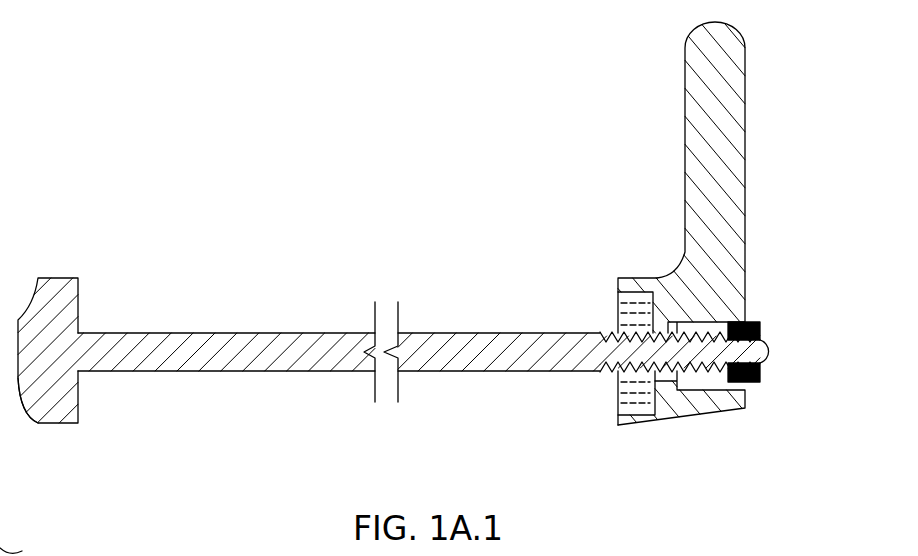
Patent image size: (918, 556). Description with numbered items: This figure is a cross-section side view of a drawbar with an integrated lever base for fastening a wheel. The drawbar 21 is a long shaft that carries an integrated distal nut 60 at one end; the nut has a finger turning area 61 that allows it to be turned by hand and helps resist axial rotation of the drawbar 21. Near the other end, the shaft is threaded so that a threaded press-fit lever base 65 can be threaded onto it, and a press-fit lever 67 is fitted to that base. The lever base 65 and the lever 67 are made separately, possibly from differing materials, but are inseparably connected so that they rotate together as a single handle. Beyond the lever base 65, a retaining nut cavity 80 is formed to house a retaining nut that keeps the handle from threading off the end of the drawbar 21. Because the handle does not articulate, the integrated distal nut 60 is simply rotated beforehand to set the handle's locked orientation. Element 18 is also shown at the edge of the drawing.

The bone plate 18 is at (15, 552).
The drawbar 21 is at (292, 353).
The integrated distal nut 60 is at (75, 303).
The finger turning area 61 is at (27, 380).
The threaded press-fit lever base 65 is at (621, 303).
The press-fit lever 67 is at (715, 128).
The retaining nut cavity 80 is at (698, 375).